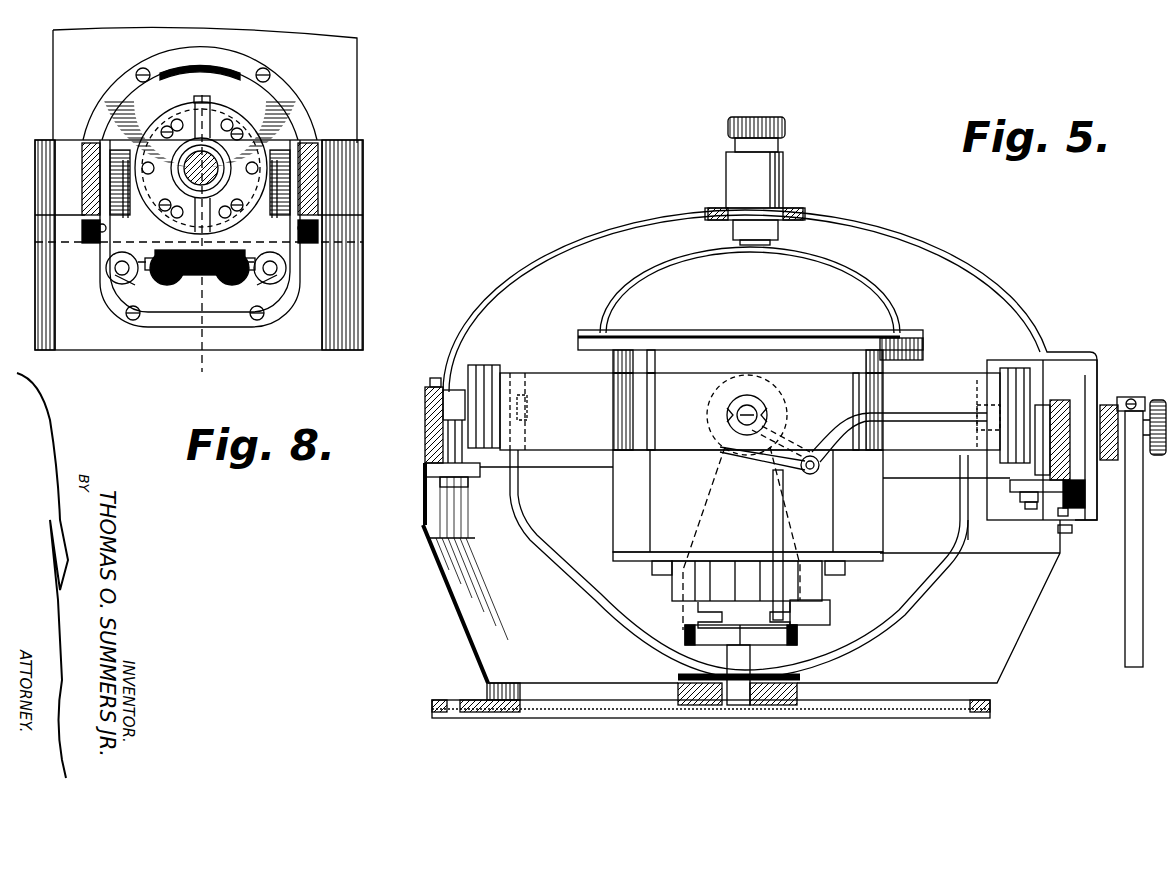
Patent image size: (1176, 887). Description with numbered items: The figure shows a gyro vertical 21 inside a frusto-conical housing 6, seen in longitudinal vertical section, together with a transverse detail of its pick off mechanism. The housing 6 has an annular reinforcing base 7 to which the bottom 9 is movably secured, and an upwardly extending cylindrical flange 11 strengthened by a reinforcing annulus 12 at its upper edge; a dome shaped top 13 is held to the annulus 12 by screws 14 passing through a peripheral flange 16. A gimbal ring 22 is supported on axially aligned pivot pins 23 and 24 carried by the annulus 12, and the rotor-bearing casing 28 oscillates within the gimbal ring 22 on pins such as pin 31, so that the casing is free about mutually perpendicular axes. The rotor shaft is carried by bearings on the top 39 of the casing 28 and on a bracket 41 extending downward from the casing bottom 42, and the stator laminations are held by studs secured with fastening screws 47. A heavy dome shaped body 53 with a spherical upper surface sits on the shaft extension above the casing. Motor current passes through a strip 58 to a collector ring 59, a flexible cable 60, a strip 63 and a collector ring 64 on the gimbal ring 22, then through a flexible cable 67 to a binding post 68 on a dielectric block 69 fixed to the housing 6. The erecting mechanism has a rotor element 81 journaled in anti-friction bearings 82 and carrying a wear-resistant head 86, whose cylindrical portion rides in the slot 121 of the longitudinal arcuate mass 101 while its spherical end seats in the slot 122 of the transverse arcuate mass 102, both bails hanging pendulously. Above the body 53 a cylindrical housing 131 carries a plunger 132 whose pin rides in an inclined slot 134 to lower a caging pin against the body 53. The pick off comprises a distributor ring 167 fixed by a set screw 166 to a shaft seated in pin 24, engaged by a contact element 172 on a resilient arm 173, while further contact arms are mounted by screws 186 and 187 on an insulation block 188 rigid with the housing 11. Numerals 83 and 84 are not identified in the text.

In FIG. 5, the housing 6 is at (452, 641).
In FIG. 5, the annular reinforcing base 7 is at (475, 716).
In FIG. 5, the bottom 9 is at (585, 718).
In FIG. 8, the cylindrical flange 11 is at (345, 292).
In FIG. 5, the cylindrical flange 11 is at (442, 587).
In FIG. 8, the reinforcing annulus 12 is at (355, 152).
In FIG. 5, the reinforcing annulus 12 is at (430, 430).
In FIG. 8, the dome shaped top 13 is at (357, 63).
In FIG. 5, the dome shaped top 13 is at (623, 224).
In FIG. 5, the screws 14 is at (430, 380).
In FIG. 5, the peripheral flange 16 is at (425, 393).
In FIG. 5, the gyro vertical 21 is at (928, 378).
In FIG. 5, the gimbal ring 22 is at (940, 382).
In FIG. 5, the pivot pin 23 is at (448, 410).
In FIG. 5, the pivot pin 24 is at (1052, 410).
In FIG. 5, the rotor-bearing casing 28 is at (748, 538).
In FIG. 5, the pin 31 is at (757, 412).
In FIG. 5, the top of rotor-bearing casing 39 is at (905, 340).
In FIG. 5, the bracket 41 is at (700, 612).
In FIG. 5, the bottom of rotor-bearing casing 42 is at (615, 558).
In FIG. 5, the fastening screws 47 is at (803, 600).
In FIG. 5, the dome shaped body 53 is at (847, 275).
In FIG. 5, the strip of electrically conductive material 58 is at (780, 523).
In FIG. 5, the collector ring 59 is at (780, 433).
In FIG. 5, the flexible cable 60 is at (765, 455).
In FIG. 5, the strip of electrically conductive material 63 is at (930, 417).
In FIG. 5, the collector ring 64 is at (483, 368).
In FIG. 5, the flexible cable 67 is at (1015, 493).
In FIG. 5, the binding post 68 is at (1028, 504).
In FIG. 5, the block of dielectric material 69 is at (1058, 512).
In FIG. 8, the rotor element 81 is at (300, 166).
In FIG. 8, the anti-friction bearings 82 is at (92, 172).
In FIG. 8, the pole piece 83 is at (305, 195).
In FIG. 8, the screw 84 is at (137, 230).
In FIG. 5, the head 86 is at (738, 690).
In FIG. 5, the arcuate mass 101 is at (932, 590).
In FIG. 5, the arcuate mass 102 is at (772, 703).
In FIG. 5, the slot 121 is at (968, 530).
In FIG. 5, the slot 122 is at (714, 703).
In FIG. 5, the cylindrical housing 131 is at (738, 170).
In FIG. 5, the plunger 132 is at (730, 140).
In FIG. 5, the inclined slot 134 is at (772, 180).
In FIG. 8, the set screw 166 is at (215, 237).
In FIG. 8, the distributor ring 167 is at (286, 133).
In FIG. 5, the distributor ring 167 is at (1118, 389).
In FIG. 8, the contact element 172 is at (215, 77).
In FIG. 8, the resilient contact arm 173 is at (202, 95).
In FIG. 8, the screw 186 is at (295, 244).
In FIG. 8, the screw 187 is at (107, 285).
In FIG. 8, the block of insulation material 188 is at (172, 282).